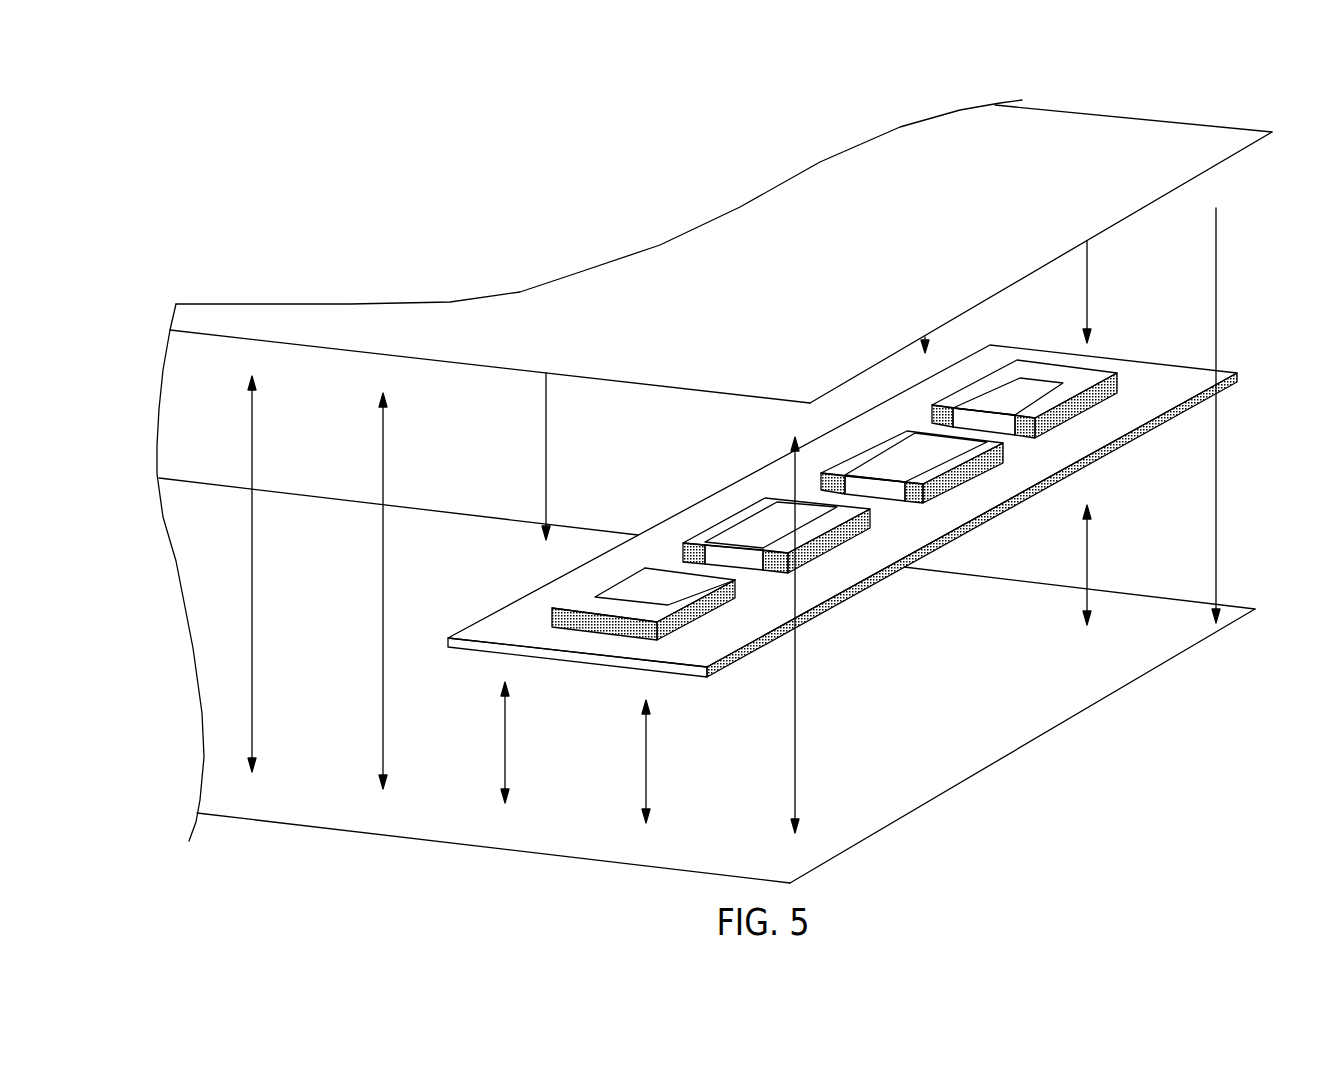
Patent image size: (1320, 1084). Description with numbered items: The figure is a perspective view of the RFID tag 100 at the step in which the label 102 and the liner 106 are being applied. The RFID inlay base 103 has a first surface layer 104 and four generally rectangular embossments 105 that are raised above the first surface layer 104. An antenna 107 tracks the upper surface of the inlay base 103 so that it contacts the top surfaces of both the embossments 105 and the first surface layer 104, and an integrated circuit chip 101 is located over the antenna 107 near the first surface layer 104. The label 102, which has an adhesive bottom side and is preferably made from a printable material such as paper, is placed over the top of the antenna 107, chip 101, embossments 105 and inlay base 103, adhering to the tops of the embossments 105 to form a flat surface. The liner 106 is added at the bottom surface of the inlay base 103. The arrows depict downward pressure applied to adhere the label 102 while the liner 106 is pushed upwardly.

The RFID tag 100 is at (1173, 380).
The integrated circuit chip 101 is at (850, 502).
The label 102 is at (881, 261).
The RFID inlay base 103 is at (1137, 438).
The first surface layer 104 is at (687, 568).
The embossments 105 is at (1028, 370).
The liner 106 is at (912, 735).
The antenna 107 is at (633, 582).